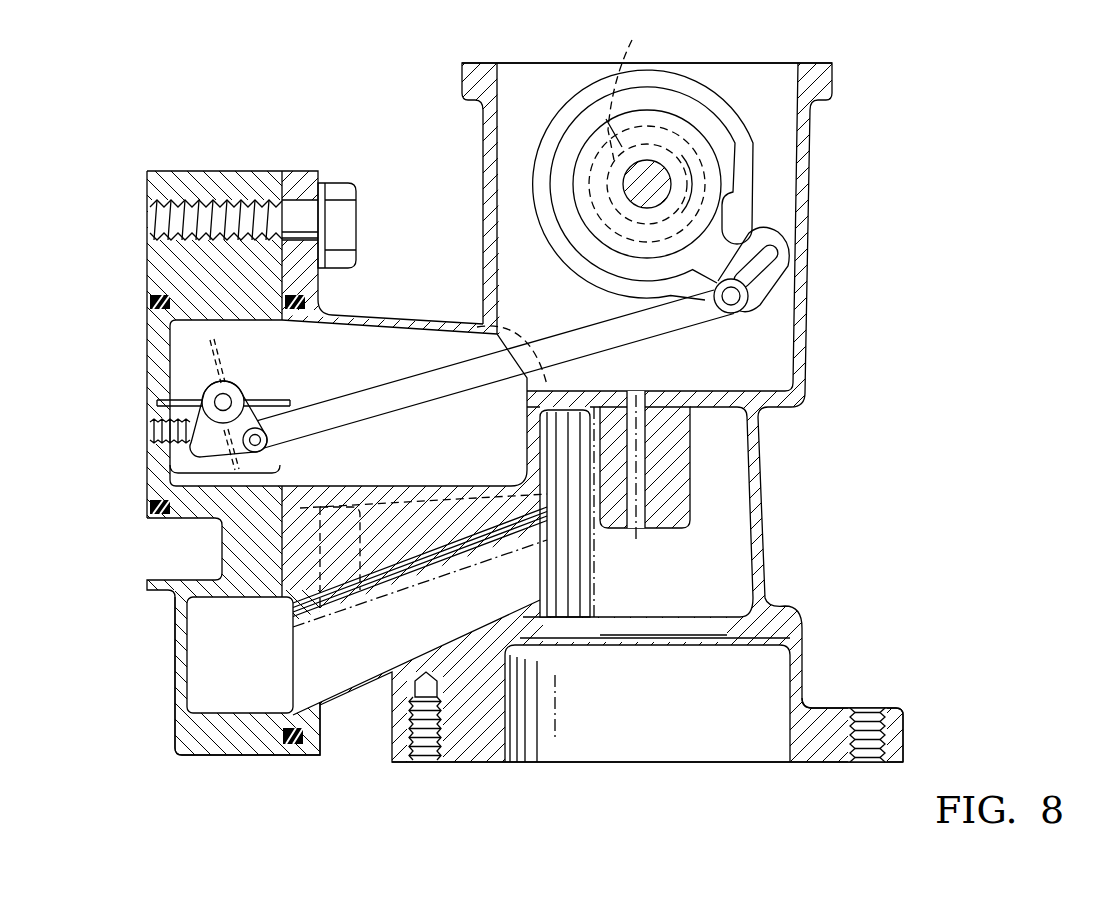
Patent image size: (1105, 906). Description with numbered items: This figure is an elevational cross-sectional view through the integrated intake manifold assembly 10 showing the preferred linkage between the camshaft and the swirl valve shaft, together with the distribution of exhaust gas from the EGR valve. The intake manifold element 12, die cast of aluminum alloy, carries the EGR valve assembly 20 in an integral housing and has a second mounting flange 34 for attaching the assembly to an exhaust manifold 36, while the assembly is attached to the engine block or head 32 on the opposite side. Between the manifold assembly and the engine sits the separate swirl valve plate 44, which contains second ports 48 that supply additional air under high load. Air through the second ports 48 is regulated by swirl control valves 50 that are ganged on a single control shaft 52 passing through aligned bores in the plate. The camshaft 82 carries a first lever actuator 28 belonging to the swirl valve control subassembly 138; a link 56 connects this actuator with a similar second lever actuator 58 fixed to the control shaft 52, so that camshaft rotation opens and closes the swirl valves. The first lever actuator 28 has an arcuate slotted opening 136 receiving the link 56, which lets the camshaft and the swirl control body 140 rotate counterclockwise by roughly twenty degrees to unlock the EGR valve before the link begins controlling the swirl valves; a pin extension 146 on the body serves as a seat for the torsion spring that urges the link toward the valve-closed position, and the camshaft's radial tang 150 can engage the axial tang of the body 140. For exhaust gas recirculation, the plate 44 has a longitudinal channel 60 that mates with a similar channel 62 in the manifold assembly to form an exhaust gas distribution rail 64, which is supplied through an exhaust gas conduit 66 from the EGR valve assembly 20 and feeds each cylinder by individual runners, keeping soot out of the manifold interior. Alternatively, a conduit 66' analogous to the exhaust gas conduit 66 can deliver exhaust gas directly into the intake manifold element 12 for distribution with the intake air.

The integrated intake manifold assembly 10 is at (714, 42).
The intake manifold element 12 is at (358, 313).
The EGR valve assembly 20 is at (784, 496).
The first lever actuator 28 is at (786, 254).
The engine block or head 32 is at (128, 463).
The second mounting flange 34 is at (822, 712).
The exhaust manifold 36 is at (817, 803).
The swirl valve plate 44 is at (177, 163).
The second ports 48 is at (242, 360).
The swirl control valves 50 is at (200, 403).
The control shaft 52 is at (220, 397).
The link 56 is at (430, 385).
The second lever actuator 58 is at (237, 430).
The longitudinal channel 60 is at (208, 668).
The channel 62 is at (286, 692).
The exhaust gas distribution rail 64 is at (208, 764).
The exhaust gas conduit 66 is at (420, 634).
The conduit 66' is at (487, 352).
The camshaft 82 is at (668, 184).
The arcuate slotted opening 136 is at (765, 267).
The swirl valve control subassembly 138 is at (762, 145).
The swirl control body 140 is at (735, 107).
The pin extension 146 is at (744, 302).
The radial tang 150 is at (514, 128).